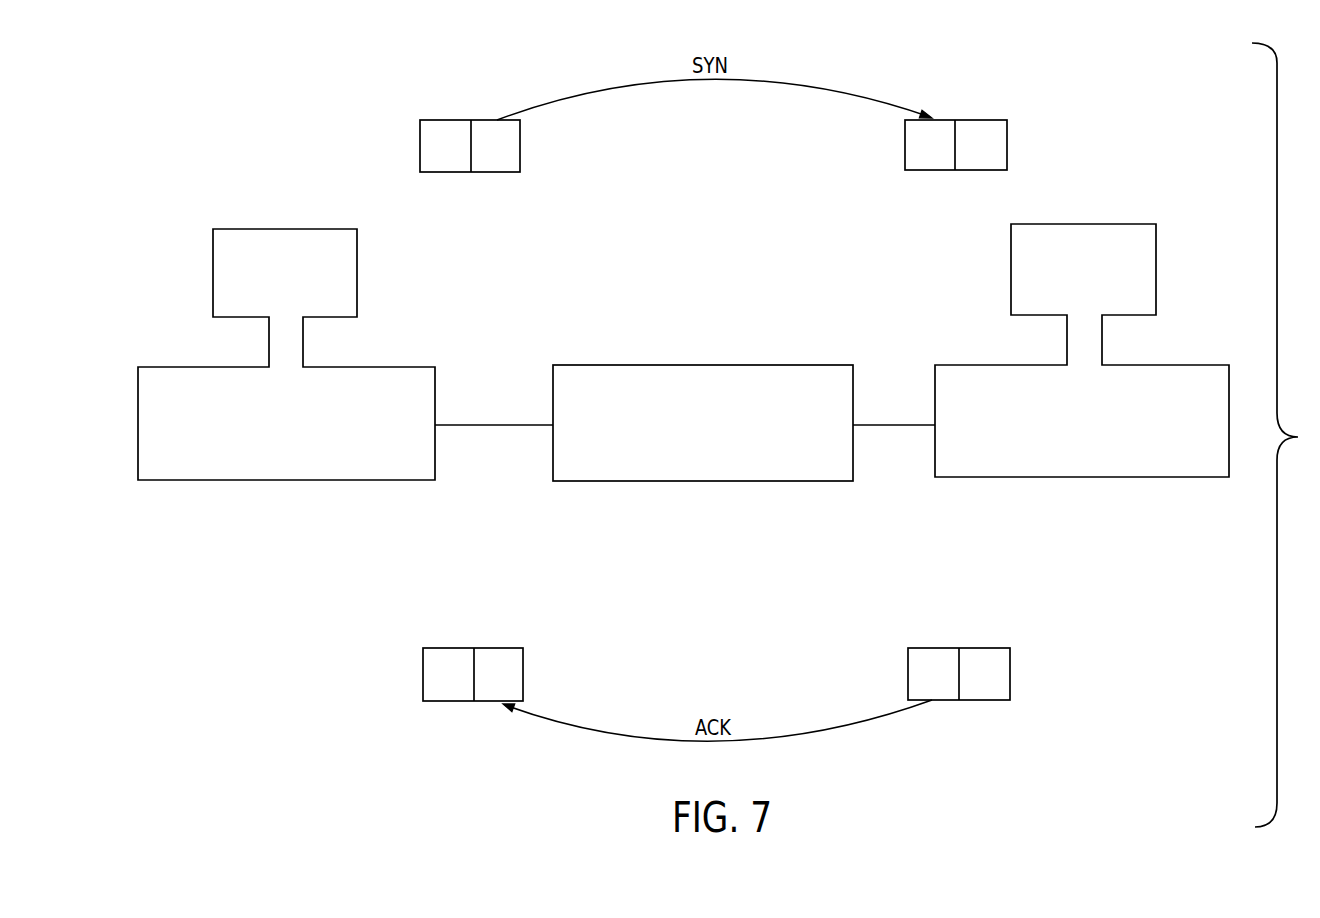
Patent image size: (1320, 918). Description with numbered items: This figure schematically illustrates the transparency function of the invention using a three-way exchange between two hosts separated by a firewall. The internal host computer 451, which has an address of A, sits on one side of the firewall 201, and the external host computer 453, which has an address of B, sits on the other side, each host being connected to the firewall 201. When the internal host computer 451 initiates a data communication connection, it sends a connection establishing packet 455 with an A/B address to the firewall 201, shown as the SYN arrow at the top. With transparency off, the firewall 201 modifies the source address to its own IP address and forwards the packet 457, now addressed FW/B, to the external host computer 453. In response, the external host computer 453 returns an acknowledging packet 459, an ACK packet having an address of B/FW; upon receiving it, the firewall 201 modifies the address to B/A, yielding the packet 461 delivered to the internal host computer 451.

The internal host computer 451 is at (167, 480).
The firewall 201 is at (609, 481).
The external host computer 453 is at (1029, 477).
The connection establishing packet with A/B address 455 is at (507, 172).
The packet 457 is at (973, 170).
The acknowledging packet 459 is at (977, 700).
The B/A packet 461 is at (465, 701).